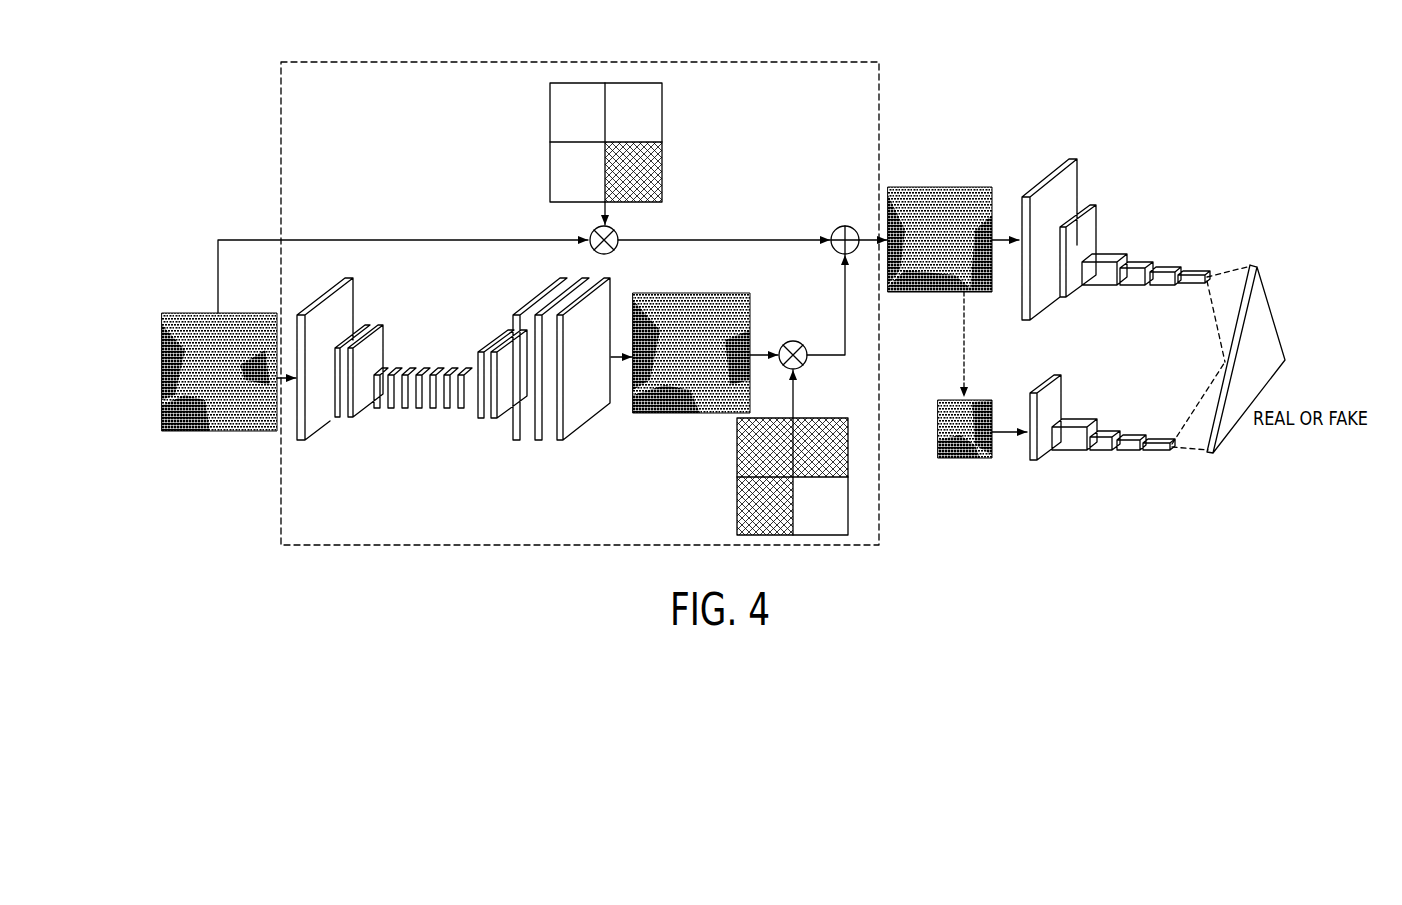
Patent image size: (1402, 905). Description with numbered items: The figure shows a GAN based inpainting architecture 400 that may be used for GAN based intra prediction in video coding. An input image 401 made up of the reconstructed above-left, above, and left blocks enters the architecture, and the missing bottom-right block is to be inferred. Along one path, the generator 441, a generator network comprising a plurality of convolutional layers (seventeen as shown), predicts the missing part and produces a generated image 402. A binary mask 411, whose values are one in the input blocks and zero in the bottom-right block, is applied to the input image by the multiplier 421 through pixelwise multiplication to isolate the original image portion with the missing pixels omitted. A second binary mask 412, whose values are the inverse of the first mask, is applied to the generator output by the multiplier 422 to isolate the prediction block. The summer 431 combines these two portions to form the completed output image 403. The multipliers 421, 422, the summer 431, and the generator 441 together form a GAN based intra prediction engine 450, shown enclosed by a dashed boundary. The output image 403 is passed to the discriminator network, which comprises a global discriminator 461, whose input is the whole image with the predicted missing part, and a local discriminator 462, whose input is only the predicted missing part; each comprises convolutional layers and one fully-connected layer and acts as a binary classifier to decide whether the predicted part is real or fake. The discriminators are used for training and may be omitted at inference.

The GAN based inpainting architecture 400 is at (1158, 88).
The input image 401 is at (162, 380).
The generated image 402 is at (688, 415).
The output image 403 is at (940, 187).
The mask 411 is at (548, 120).
The mask 412 is at (737, 500).
The multiplier 421 is at (616, 250).
The multiplier 422 is at (808, 362).
The summer 431 is at (835, 252).
The generator 441 is at (616, 448).
The GAN based intra prediction engine 450 is at (882, 530).
The global discriminator 461 is at (1185, 142).
The local discriminator 462 is at (1175, 468).